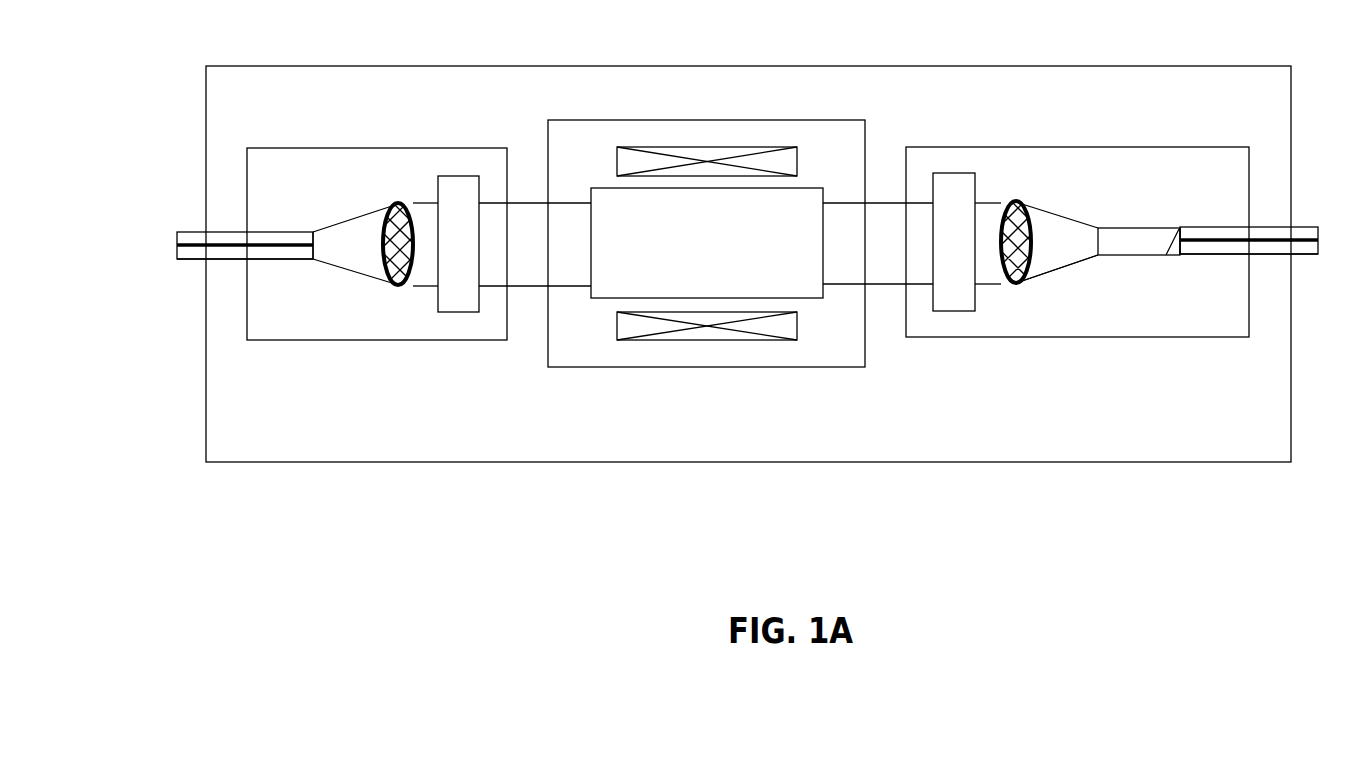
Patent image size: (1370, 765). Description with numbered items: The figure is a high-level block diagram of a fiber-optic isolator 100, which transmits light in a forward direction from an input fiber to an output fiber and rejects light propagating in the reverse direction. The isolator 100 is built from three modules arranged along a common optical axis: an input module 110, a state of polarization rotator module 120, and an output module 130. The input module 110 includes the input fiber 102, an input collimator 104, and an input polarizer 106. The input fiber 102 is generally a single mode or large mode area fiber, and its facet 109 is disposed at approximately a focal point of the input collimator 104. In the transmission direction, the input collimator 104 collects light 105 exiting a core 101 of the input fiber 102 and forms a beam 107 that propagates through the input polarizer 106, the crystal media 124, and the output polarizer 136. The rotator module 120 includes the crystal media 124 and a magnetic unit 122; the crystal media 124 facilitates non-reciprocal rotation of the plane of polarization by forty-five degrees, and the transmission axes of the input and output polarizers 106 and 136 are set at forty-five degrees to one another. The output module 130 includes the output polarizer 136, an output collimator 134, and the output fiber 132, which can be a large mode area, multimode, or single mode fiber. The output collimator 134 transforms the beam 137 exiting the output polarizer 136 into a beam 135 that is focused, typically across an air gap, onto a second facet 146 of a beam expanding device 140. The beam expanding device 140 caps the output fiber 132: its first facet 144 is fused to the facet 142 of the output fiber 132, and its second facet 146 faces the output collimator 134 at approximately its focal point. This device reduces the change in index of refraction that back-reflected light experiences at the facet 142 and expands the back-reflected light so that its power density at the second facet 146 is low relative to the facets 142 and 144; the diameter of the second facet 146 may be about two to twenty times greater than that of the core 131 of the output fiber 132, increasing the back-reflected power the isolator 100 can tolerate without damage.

The fiber-optic isolator 100 is at (258, 66).
The core 101 is at (217, 250).
The input fiber 102 is at (192, 232).
The input collimator 104 is at (396, 204).
The light 105 is at (355, 232).
The input polarizer 106 is at (463, 176).
The beam 107 is at (425, 272).
The facet 109 is at (313, 260).
The input module 110 is at (272, 340).
The state of polarization rotator module 120 is at (605, 367).
The magnetic unit 122 is at (699, 147).
The crystal media 124 is at (707, 243).
The output module 130 is at (1195, 337).
The core 131 is at (1273, 254).
The output fiber 132 is at (1262, 228).
The output collimator 134 is at (1016, 200).
The beam 135 is at (1057, 228).
The output polarizer 136 is at (949, 173).
The beam 137 is at (990, 268).
The beam expanding device 140 is at (1140, 238).
The facet 142 is at (1182, 248).
The first facet 144 is at (1176, 231).
The second facet 146 is at (1092, 246).